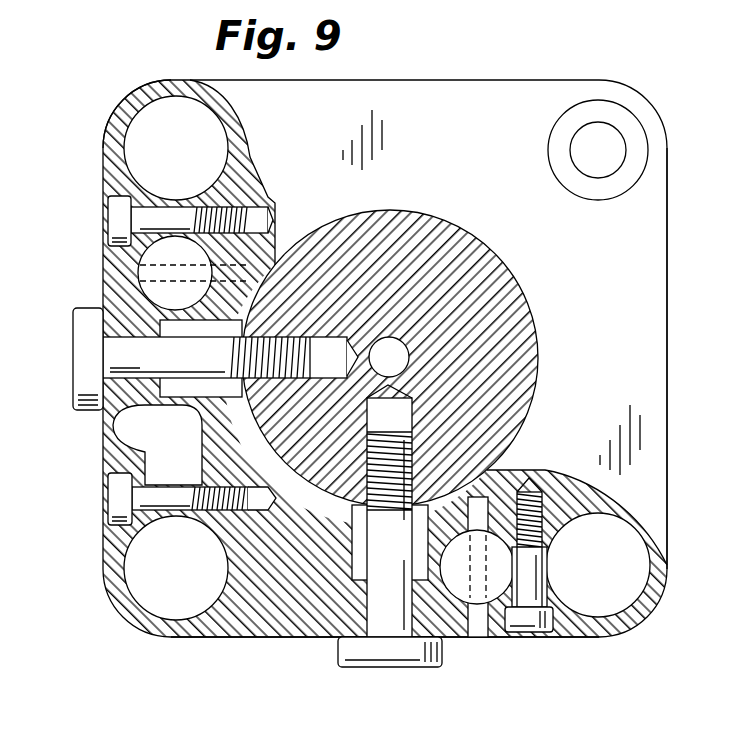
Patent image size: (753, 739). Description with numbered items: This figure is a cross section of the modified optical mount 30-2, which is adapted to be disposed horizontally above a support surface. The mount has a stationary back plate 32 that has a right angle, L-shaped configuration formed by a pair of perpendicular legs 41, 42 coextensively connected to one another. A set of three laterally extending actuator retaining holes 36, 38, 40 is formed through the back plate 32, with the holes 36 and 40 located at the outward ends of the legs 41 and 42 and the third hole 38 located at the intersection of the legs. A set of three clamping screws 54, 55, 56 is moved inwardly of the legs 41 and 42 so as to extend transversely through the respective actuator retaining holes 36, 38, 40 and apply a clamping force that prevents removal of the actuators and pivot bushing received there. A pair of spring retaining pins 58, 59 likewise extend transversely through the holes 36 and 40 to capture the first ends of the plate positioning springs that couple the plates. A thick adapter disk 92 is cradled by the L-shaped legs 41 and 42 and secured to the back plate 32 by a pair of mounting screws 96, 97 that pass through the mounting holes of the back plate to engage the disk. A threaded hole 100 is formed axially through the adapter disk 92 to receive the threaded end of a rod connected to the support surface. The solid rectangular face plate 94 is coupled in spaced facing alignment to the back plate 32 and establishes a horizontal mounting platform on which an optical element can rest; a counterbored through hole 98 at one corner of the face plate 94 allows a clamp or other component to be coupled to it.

The modified optical mount 30-2 is at (487, 80).
The stationary back plate 32 is at (148, 92).
The actuator retaining hole 36 is at (150, 135).
The actuator retaining hole 38 is at (150, 568).
The actuator retaining hole 40 is at (630, 582).
The leg 41 is at (225, 638).
The leg 42 is at (100, 430).
The clamping screw 54 is at (118, 200).
The clamping screw 55 is at (103, 492).
The clamping screw 56 is at (545, 634).
The spring retaining pin 58 is at (103, 275).
The spring retaining pin 59 is at (492, 638).
The adapter disk 92 is at (512, 270).
The rectangular face plate 94 is at (670, 215).
The mounting screw 96 is at (75, 345).
The mounting screw 97 is at (388, 660).
The counterbored through hole 98 is at (620, 141).
The threaded hole 100 is at (402, 360).